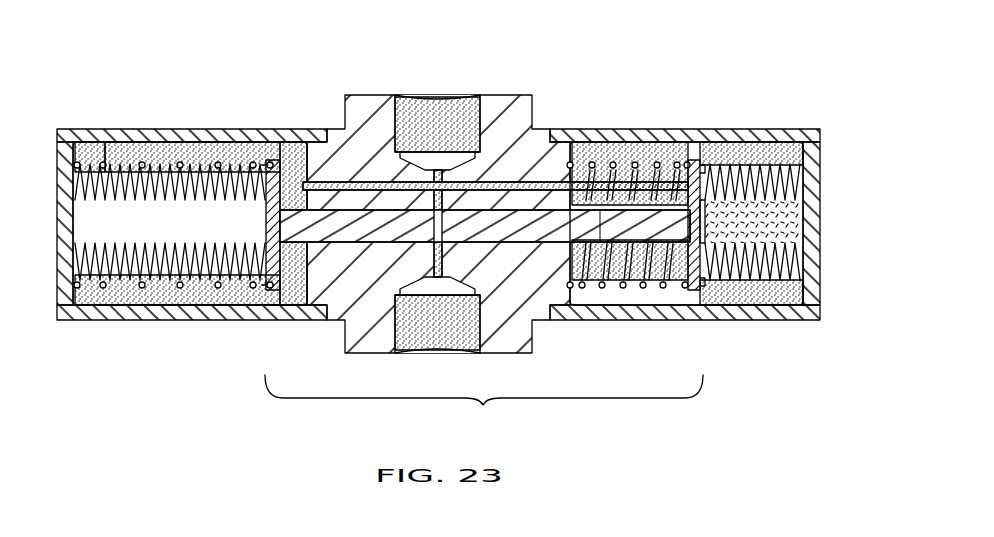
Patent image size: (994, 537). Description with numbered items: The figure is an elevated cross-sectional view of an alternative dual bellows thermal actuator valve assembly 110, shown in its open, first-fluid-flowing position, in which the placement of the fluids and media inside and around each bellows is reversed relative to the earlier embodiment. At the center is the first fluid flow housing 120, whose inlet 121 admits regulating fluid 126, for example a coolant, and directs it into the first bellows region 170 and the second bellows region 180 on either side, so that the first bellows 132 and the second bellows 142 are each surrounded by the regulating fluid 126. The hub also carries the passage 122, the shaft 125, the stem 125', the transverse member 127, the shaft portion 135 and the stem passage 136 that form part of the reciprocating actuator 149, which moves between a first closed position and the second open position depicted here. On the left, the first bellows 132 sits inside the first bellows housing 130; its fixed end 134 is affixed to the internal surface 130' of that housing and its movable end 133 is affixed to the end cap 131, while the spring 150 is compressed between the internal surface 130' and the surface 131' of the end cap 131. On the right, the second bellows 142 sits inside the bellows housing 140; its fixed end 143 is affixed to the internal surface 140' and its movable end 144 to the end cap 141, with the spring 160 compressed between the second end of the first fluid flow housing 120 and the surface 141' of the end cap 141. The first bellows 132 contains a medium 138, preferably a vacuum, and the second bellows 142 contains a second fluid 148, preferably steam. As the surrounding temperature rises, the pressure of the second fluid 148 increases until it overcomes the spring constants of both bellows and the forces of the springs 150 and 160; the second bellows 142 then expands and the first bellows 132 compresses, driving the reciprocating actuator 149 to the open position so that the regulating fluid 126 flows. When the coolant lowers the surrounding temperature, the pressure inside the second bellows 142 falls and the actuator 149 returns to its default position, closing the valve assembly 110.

The valve assembly 110 is at (768, 63).
The first fluid flow housing 120 is at (508, 140).
The inlet 121 is at (480, 150).
The lower cavity 122 is at (479, 300).
The central shaft 125 is at (485, 146).
The connecting stem 125' is at (400, 279).
The regulating fluid 126 is at (202, 153).
The thin transverse member 127 is at (333, 182).
The first bellows housing 130 is at (192, 204).
The internal surface of first bellows housing 130' is at (87, 131).
The end cap 131 is at (283, 190).
The surface of end cap 131' is at (273, 182).
The first bellows 132 is at (225, 282).
The movable end of first bellows 133 is at (236, 172).
The fixed end of first bellows 134 is at (80, 216).
The shaft portion 135 is at (611, 232).
The stem passage 136 is at (440, 226).
The medium 138 is at (152, 234).
The bellows housing 140 is at (685, 109).
The internal surface of bellows housing 140' is at (685, 318).
The end cap 141 is at (707, 174).
The surface of end cap 141' is at (689, 192).
The second bellows 142 is at (752, 163).
The fixed end of second bellows 143 is at (797, 208).
The movable end of second bellows 144 is at (704, 215).
The second fluid 148 is at (790, 225).
The reciprocating actuator 149 is at (484, 406).
The spring 150 is at (140, 163).
The spring 160 is at (622, 163).
The first bellows region 170 is at (108, 296).
The second bellows region 180 is at (806, 149).